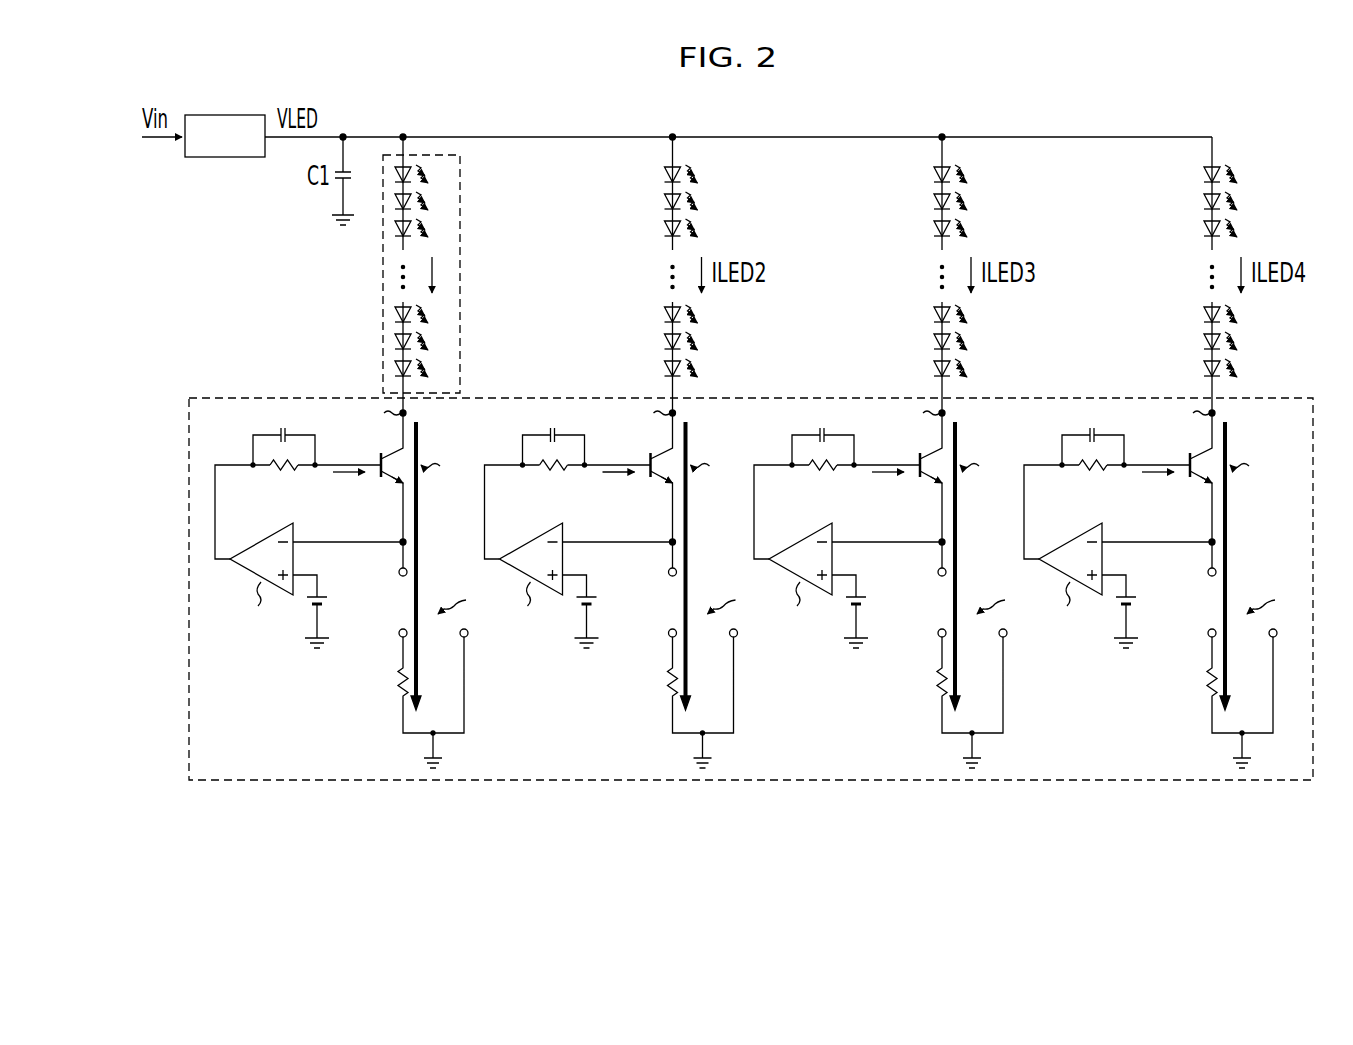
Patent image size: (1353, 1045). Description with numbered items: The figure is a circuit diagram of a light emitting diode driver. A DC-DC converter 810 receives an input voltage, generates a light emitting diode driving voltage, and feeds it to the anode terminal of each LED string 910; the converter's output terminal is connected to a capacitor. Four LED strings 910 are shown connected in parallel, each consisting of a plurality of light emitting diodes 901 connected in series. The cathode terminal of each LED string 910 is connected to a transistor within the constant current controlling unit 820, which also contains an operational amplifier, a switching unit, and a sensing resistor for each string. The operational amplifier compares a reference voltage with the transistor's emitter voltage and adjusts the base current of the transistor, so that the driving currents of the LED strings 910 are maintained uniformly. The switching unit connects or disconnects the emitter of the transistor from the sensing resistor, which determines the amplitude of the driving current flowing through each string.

The DC-DC converter 810 is at (238, 115).
The constant current controlling unit 820 is at (232, 398).
The light emitting diode 901 is at (650, 223).
The light emitting diode string 910 is at (460, 176).